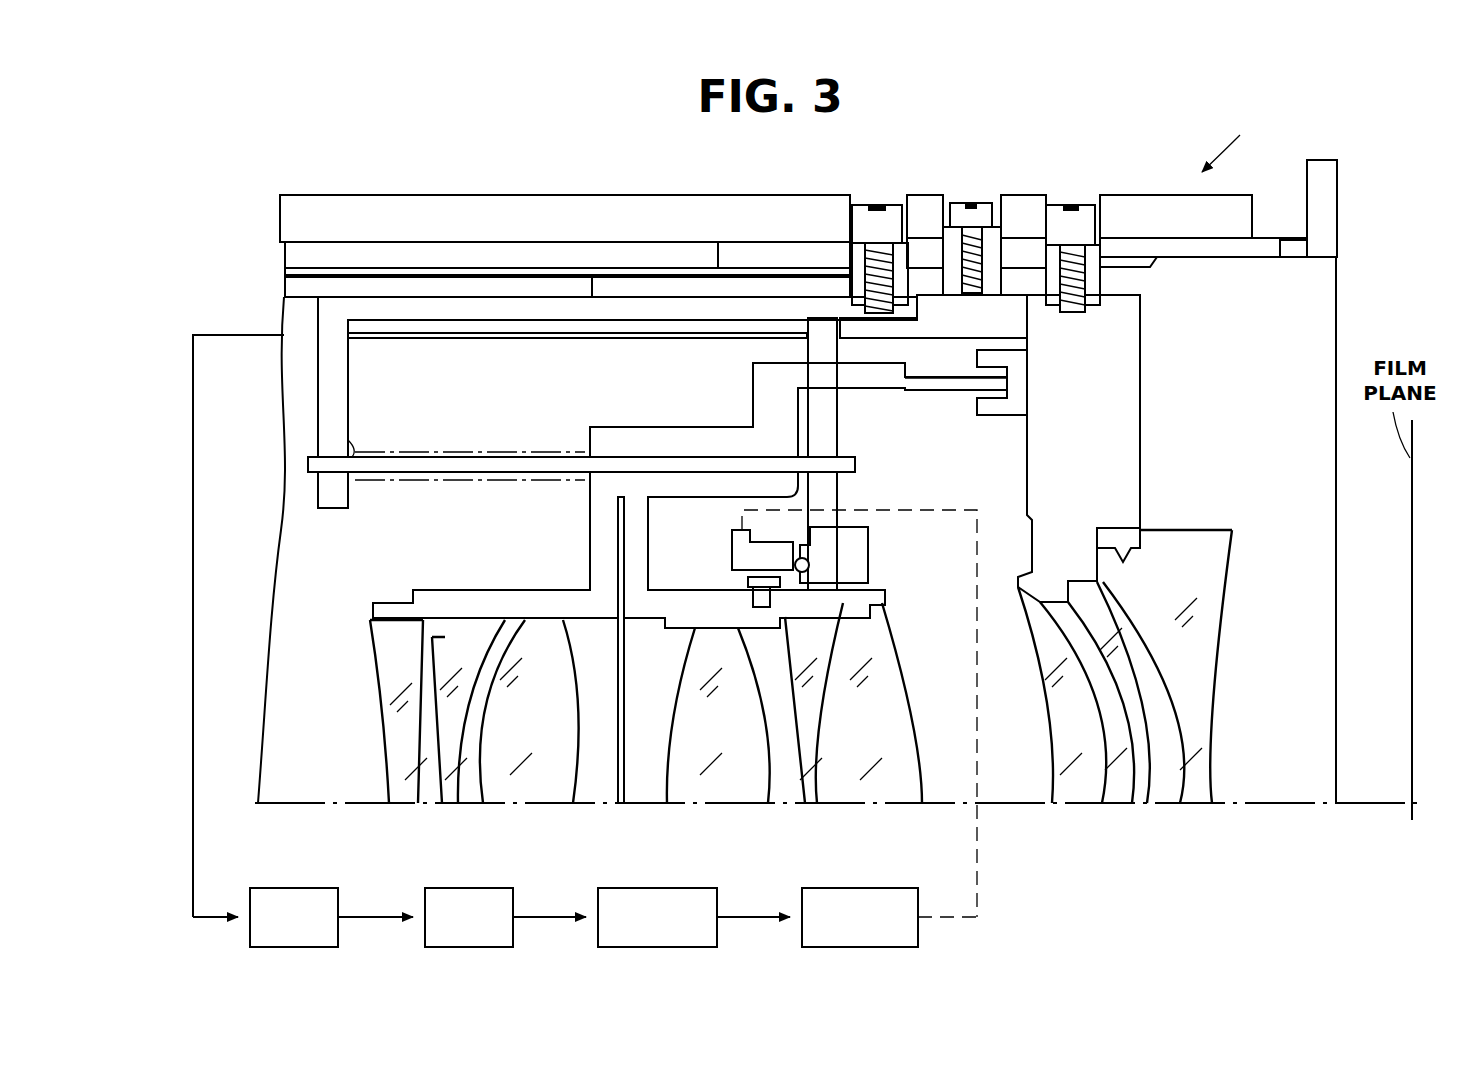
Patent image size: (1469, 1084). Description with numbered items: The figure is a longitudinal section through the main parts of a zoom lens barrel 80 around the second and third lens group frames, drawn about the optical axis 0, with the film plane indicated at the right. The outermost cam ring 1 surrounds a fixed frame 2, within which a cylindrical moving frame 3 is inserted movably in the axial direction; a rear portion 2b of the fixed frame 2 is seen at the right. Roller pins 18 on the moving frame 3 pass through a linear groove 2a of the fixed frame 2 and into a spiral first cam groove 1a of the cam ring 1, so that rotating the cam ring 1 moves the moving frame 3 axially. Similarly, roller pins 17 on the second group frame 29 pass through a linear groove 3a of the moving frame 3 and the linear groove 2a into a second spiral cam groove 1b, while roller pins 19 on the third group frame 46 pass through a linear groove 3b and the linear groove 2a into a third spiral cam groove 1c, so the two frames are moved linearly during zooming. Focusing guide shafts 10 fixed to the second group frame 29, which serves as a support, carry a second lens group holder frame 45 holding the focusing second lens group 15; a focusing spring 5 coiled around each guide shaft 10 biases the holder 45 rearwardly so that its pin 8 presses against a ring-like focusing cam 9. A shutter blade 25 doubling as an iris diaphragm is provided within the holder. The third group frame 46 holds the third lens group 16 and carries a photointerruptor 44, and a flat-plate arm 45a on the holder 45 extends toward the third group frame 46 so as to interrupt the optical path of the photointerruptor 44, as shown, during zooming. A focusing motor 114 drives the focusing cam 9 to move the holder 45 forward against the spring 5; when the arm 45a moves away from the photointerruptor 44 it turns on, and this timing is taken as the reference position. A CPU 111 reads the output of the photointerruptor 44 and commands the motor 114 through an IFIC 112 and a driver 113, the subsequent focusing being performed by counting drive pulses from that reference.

The cam ring 1 is at (645, 222).
The first cam groove 1a is at (990, 200).
The second spiral cam groove 1b is at (876, 238).
The third spiral cam groove 1c is at (1090, 200).
The fixed frame 2 is at (523, 252).
The linear groove 2a is at (924, 250).
The mount flange 2b is at (1325, 228).
The moving frame 3 is at (398, 280).
The linear groove 3a is at (738, 285).
The linear groove 3b is at (1018, 300).
The focusing spring 5 is at (350, 445).
The pin 8 is at (850, 577).
The focusing cam 9 is at (745, 548).
The focusing guide shafts 10 is at (308, 465).
The second lens group 15 is at (925, 838).
The third lens group 16 is at (1218, 838).
The roller pins 17 is at (876, 212).
The roller pins 18 is at (968, 230).
The roller pins 19 is at (1066, 230).
The shutter blade 25 is at (613, 762).
The second group frame 29 is at (332, 312).
The photointerruptor 44 is at (1000, 417).
The second lens group holder frame 45 is at (430, 600).
The arm 45a is at (920, 392).
The third group frame 46 is at (1112, 370).
The lens barrel assembly 80 is at (1238, 142).
The optical axis 0 is at (258, 800).
The CPU 111 is at (318, 888).
The IFIC 112 is at (495, 888).
The driver 113 is at (700, 888).
The focusing motor 114 is at (903, 888).